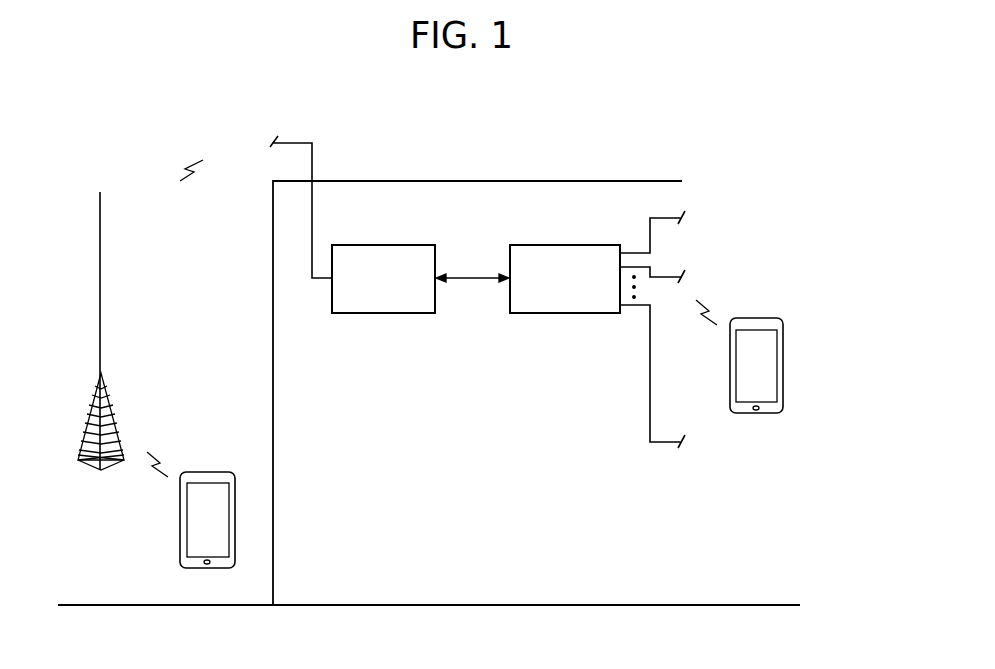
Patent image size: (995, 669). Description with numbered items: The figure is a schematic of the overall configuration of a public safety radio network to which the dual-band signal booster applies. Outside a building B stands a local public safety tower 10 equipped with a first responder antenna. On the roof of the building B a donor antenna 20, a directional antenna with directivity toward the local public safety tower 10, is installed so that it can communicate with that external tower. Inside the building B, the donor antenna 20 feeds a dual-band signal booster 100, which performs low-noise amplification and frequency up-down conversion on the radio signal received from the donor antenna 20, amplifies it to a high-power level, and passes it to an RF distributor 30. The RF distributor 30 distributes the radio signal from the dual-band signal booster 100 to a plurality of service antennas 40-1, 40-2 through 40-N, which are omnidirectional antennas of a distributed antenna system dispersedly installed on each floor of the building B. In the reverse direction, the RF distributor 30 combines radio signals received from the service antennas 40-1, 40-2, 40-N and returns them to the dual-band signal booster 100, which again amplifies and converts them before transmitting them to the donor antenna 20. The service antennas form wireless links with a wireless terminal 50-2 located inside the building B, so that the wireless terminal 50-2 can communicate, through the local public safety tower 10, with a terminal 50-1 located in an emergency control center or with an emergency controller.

The local public safety tower 10 is at (100, 222).
The donor antenna 20 is at (272, 141).
The building B is at (450, 181).
The dual-band signal booster 100 is at (383, 313).
The RF distributor 30 is at (583, 313).
The service antenna 40-1 is at (684, 216).
The service antenna 40-2 is at (684, 276).
The service antenna 40-N is at (684, 442).
The terminal 50-1 is at (180, 517).
The wireless terminal 50-2 is at (783, 367).